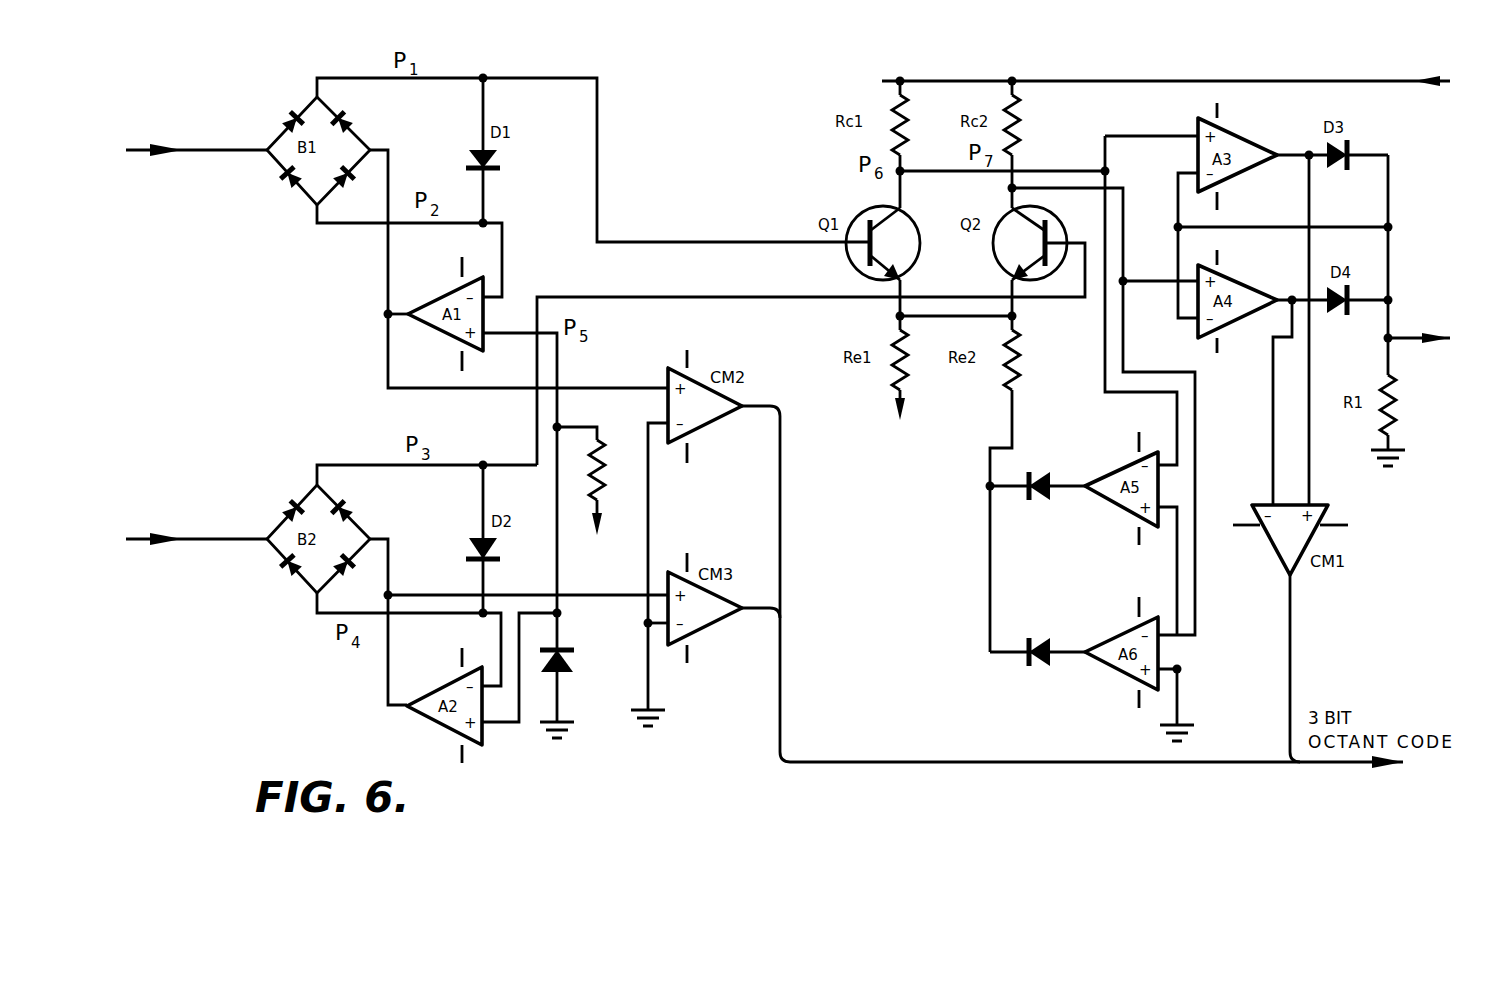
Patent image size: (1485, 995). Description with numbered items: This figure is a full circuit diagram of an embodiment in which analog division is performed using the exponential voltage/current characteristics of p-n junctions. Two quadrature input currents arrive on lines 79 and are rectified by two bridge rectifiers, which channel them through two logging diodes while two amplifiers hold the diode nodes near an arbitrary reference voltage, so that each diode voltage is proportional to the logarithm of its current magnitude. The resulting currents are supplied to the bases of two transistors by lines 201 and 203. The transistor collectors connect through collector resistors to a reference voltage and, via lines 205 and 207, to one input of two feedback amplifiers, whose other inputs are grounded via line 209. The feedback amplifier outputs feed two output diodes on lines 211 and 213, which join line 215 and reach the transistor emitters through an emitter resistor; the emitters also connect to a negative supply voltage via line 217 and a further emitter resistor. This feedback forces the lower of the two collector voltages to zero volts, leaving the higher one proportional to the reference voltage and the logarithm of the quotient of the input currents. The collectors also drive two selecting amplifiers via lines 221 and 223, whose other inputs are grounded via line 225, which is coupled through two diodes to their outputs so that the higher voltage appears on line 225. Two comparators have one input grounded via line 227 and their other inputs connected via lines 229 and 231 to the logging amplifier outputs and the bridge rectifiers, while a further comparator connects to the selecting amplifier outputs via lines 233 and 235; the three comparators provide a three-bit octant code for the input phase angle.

The lines 79 is at (197, 150).
The line 201 is at (647, 242).
The line 203 is at (647, 297).
The line 205 is at (1103, 337).
The line 207 is at (1197, 476).
The line 209 is at (1178, 600).
The line 211 is at (1012, 490).
The line 213 is at (1010, 654).
The line 215 is at (990, 540).
The line 217 is at (905, 393).
The line 221 is at (1105, 136).
The line 223 is at (1032, 174).
The line 225 is at (1284, 227).
The line 227 is at (650, 700).
The line 229 is at (386, 331).
The line 231 is at (578, 598).
The line 233 is at (1273, 365).
The line 235 is at (1310, 474).